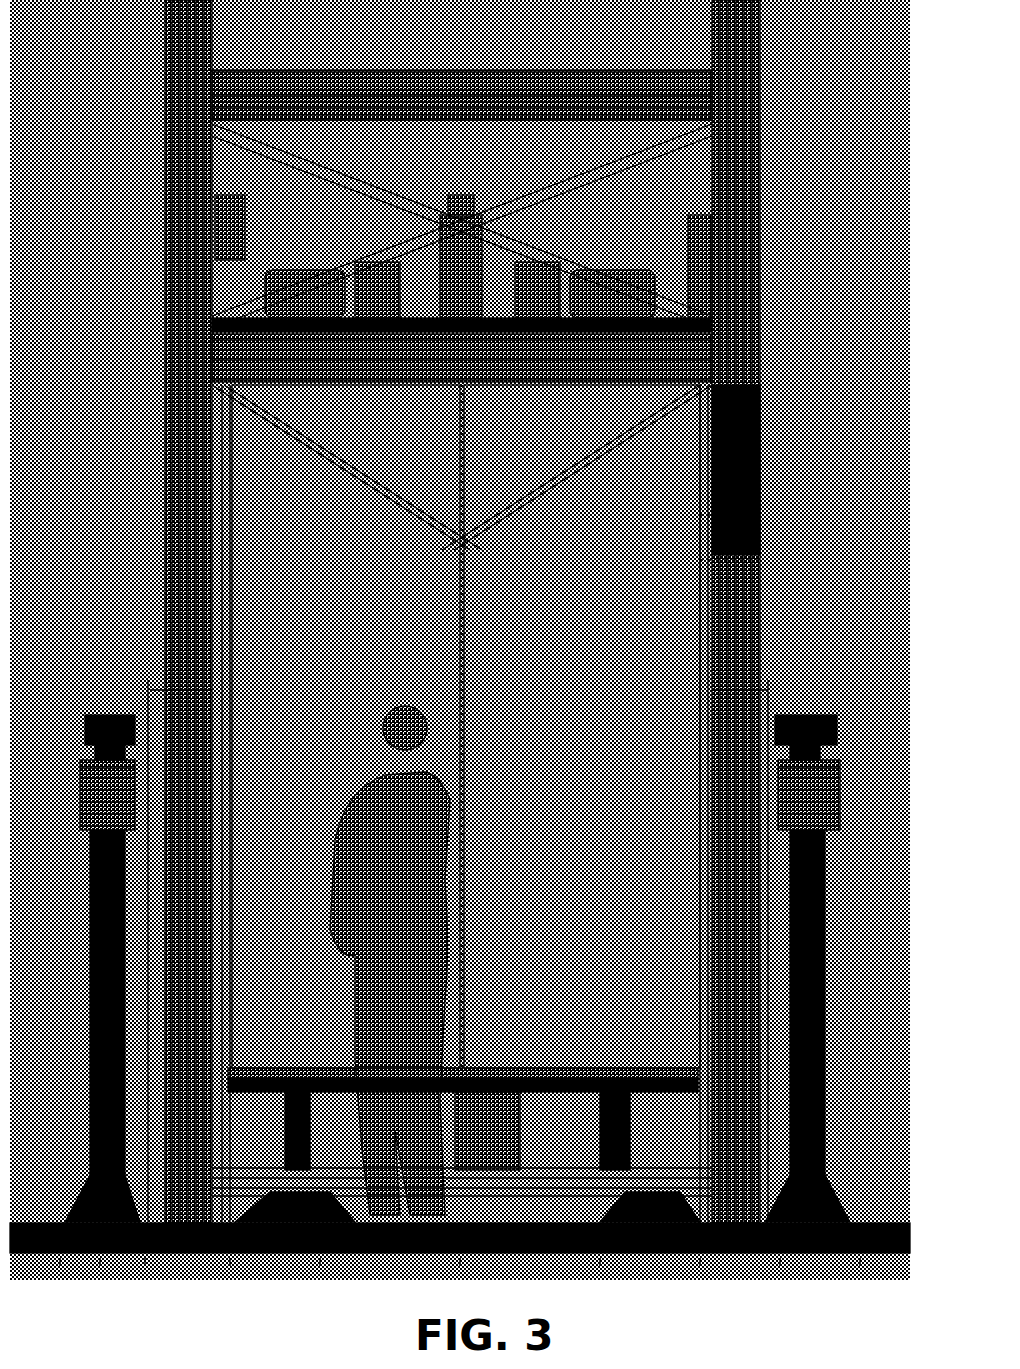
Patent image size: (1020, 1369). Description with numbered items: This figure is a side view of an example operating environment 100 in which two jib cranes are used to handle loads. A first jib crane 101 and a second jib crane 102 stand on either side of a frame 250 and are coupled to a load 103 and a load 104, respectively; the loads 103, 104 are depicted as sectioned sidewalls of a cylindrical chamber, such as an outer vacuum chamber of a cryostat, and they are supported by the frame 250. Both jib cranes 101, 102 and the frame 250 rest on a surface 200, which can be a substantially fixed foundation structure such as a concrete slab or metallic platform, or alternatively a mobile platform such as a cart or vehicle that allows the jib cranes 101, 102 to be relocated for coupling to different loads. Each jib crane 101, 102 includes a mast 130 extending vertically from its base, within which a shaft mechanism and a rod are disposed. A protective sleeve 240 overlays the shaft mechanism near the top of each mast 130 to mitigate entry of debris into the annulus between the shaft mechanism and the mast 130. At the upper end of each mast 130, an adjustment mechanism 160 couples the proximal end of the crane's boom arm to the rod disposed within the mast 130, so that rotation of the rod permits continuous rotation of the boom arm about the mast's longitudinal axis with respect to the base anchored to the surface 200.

The operating environment 100 is at (782, 146).
The frame 250 is at (762, 428).
The jib crane 102 is at (117, 612).
The jib crane 101 is at (823, 638).
The load 104 is at (352, 676).
The load 103 is at (602, 676).
The adjustment mechanism 160 is at (104, 715).
The protective sleeve 240 is at (78, 792).
The mast 130 is at (88, 1032).
The surface 200 is at (232, 1258).